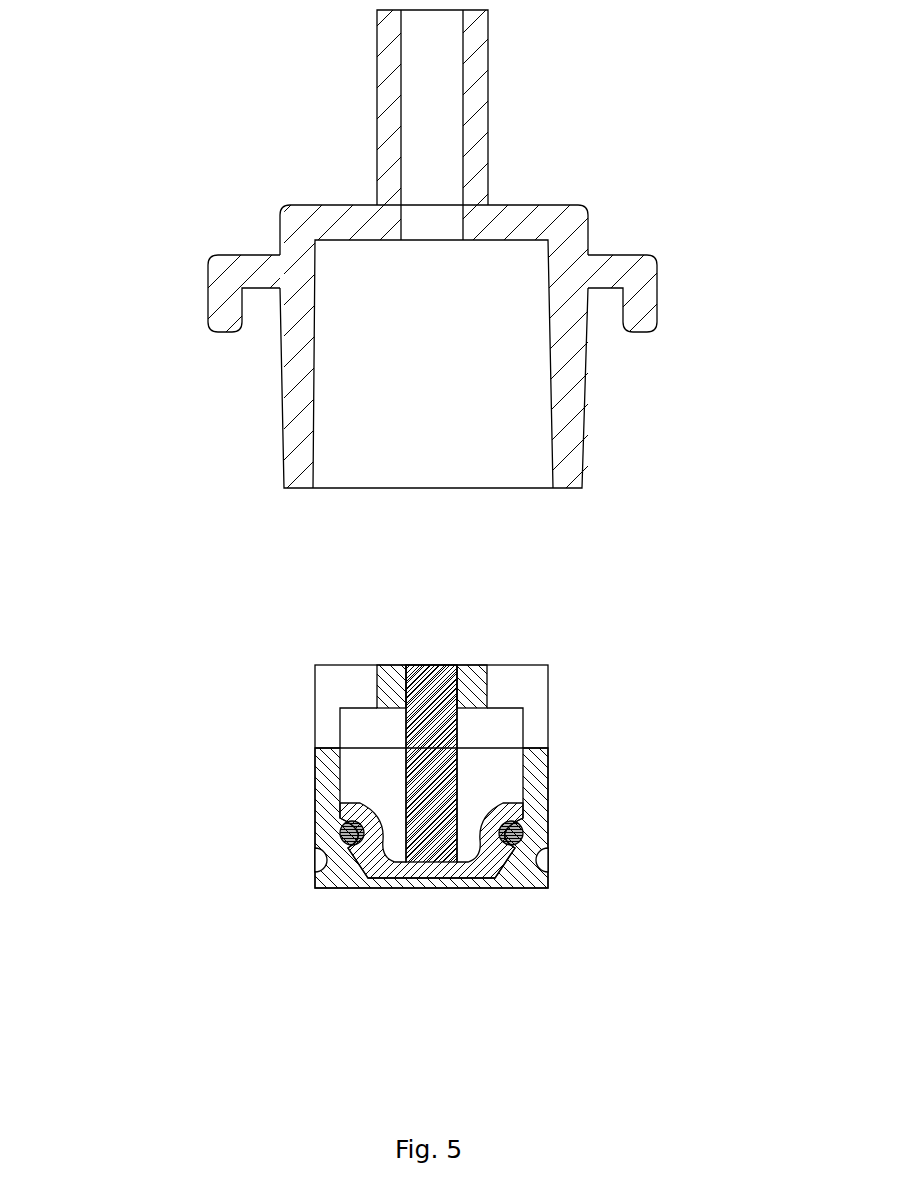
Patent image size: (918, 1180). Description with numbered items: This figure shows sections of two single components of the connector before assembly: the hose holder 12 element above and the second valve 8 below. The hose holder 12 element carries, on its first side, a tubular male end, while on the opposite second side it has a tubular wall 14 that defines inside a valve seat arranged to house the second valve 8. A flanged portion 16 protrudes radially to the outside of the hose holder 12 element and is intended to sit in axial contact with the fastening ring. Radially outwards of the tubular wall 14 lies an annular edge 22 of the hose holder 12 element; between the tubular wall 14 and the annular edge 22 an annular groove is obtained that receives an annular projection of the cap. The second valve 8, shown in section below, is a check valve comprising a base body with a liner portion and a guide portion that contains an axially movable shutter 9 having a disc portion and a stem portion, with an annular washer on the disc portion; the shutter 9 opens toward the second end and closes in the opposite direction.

The hose holder element 12 is at (385, 93).
The tubular wall 14 is at (286, 368).
The flanged portion 16 is at (622, 265).
The annular edge 22 is at (640, 312).
The second valve 8 is at (323, 782).
The shutter 9 is at (430, 866).